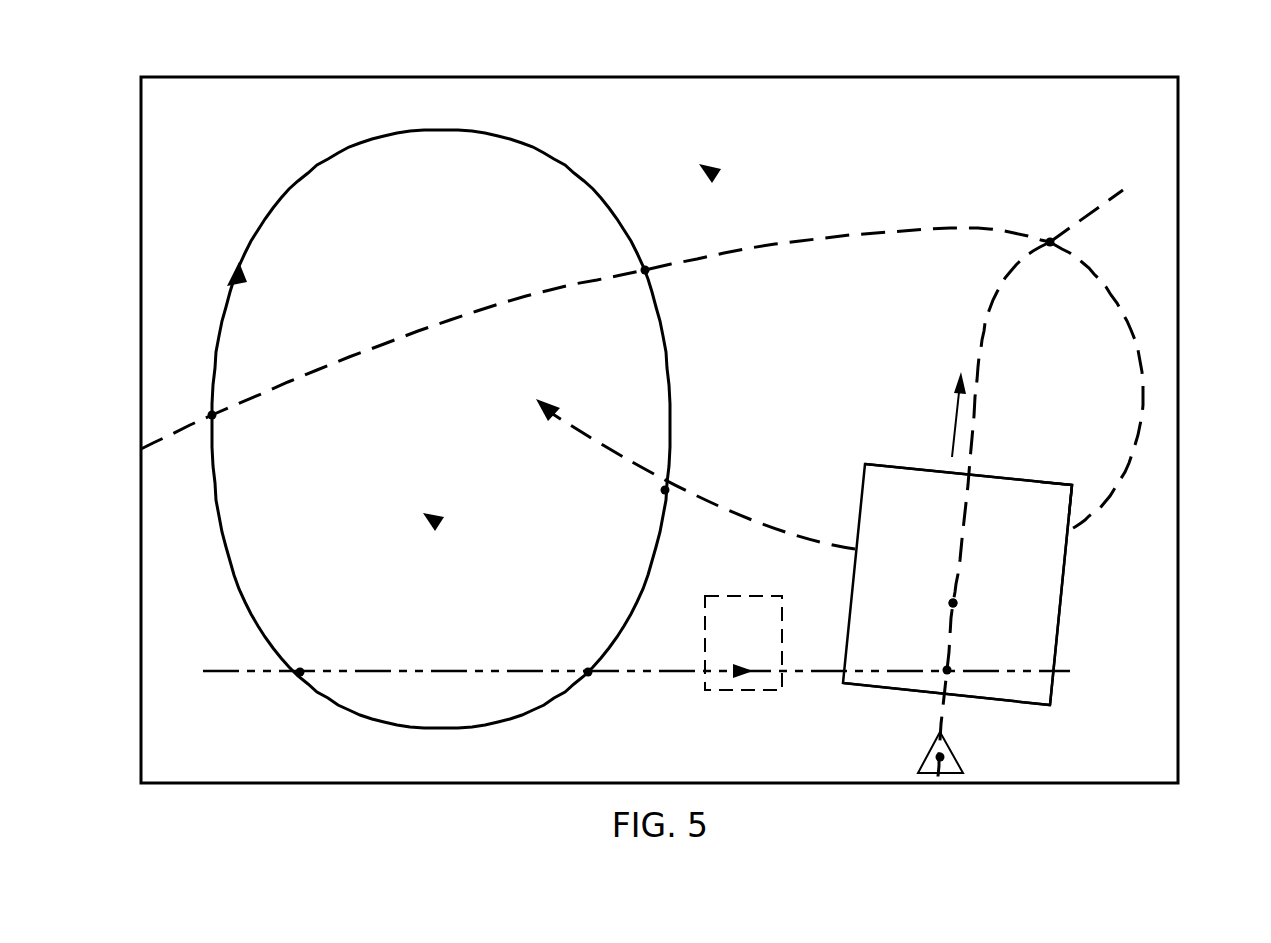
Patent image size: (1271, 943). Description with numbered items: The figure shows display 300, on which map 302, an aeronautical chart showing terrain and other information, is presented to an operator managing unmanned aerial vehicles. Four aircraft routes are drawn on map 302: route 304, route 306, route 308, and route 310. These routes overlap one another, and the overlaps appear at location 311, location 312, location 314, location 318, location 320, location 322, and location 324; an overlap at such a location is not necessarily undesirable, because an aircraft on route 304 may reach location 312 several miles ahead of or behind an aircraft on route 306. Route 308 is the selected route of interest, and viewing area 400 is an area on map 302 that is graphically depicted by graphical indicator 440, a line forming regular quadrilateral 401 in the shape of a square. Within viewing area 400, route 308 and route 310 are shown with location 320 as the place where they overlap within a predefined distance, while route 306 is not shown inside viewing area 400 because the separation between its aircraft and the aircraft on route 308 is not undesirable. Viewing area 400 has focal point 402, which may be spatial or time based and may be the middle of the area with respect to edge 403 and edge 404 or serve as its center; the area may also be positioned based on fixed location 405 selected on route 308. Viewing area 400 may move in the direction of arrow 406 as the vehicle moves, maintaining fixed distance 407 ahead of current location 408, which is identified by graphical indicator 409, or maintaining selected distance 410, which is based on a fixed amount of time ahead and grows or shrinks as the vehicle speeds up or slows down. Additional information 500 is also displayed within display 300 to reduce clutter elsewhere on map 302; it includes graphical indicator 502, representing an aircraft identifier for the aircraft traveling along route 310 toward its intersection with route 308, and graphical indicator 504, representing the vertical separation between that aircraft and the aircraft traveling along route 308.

The display 300 is at (1190, 207).
The map 302 is at (825, 162).
The route 304 is at (577, 171).
The route 306 is at (888, 229).
The route 308 is at (977, 356).
The route 310 is at (672, 674).
The location 311 is at (209, 411).
The location 312 is at (650, 267).
The location 314 is at (670, 487).
The location 318 is at (1048, 238).
The location 320 is at (951, 666).
The location 322 is at (585, 668).
The location 324 is at (304, 668).
The viewing area 400 is at (854, 496).
The regular quadrilateral 401 is at (1000, 470).
The focal point 402 is at (959, 601).
The edge 403 is at (1039, 707).
The edge 404 is at (1052, 482).
The fixed location 405 is at (947, 601).
The arrow 406 is at (952, 419).
The fixed distance 407 is at (983, 717).
The current location 408 is at (952, 757).
The graphical indicator 409 is at (930, 757).
The selected distance 410 is at (901, 717).
The graphical indicator 440 is at (1067, 597).
The additional information 500 is at (773, 700).
The graphical indicator 502 is at (745, 597).
The graphical indicator 504 is at (758, 633).